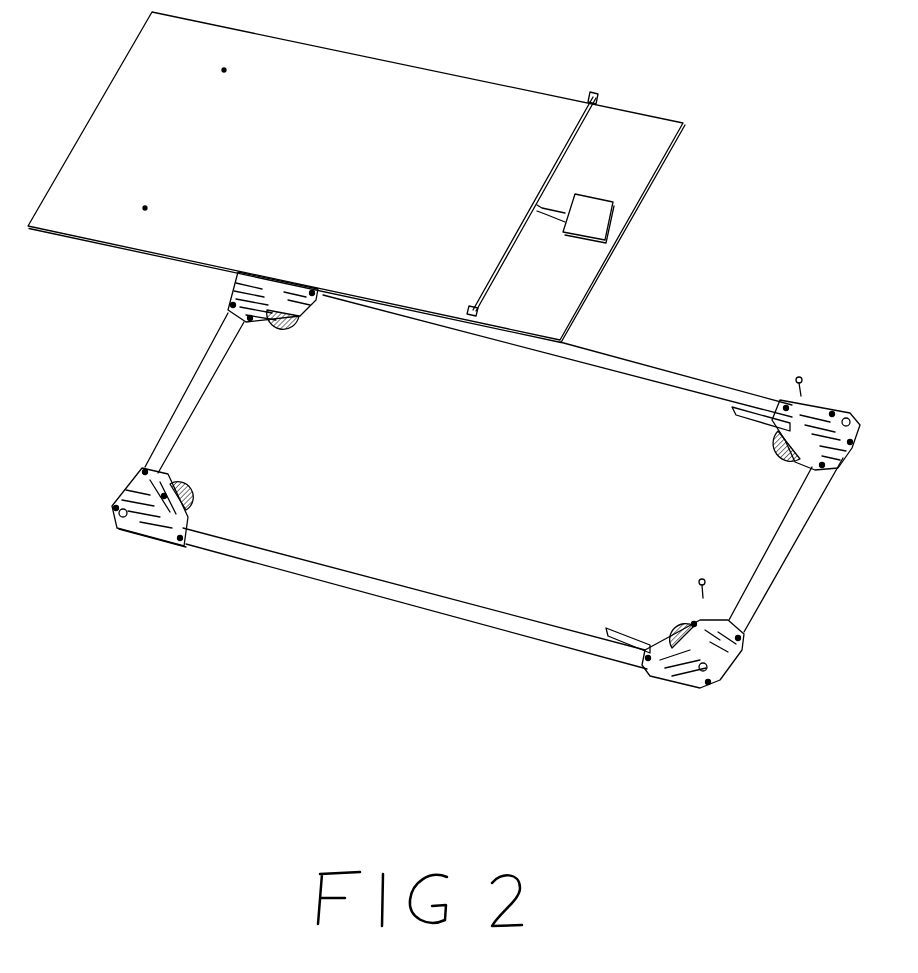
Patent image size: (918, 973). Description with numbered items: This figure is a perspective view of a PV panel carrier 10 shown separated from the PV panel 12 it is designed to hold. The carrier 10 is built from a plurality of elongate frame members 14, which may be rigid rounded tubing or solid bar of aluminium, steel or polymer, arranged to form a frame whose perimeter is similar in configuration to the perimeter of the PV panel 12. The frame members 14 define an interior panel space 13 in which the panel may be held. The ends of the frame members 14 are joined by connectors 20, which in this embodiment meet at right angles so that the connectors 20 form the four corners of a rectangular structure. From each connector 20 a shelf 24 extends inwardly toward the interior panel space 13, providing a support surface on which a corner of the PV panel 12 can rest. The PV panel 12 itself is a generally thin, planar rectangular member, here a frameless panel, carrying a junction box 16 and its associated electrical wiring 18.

The carrier 10 is at (708, 342).
The PV panel 12 is at (328, 184).
The interior panel space 13 is at (456, 493).
The frame members 14 is at (308, 572).
The junction box 16 is at (592, 206).
The electrical wiring 18 is at (568, 152).
The connectors 20 is at (857, 420).
The shelf 24 is at (287, 327).